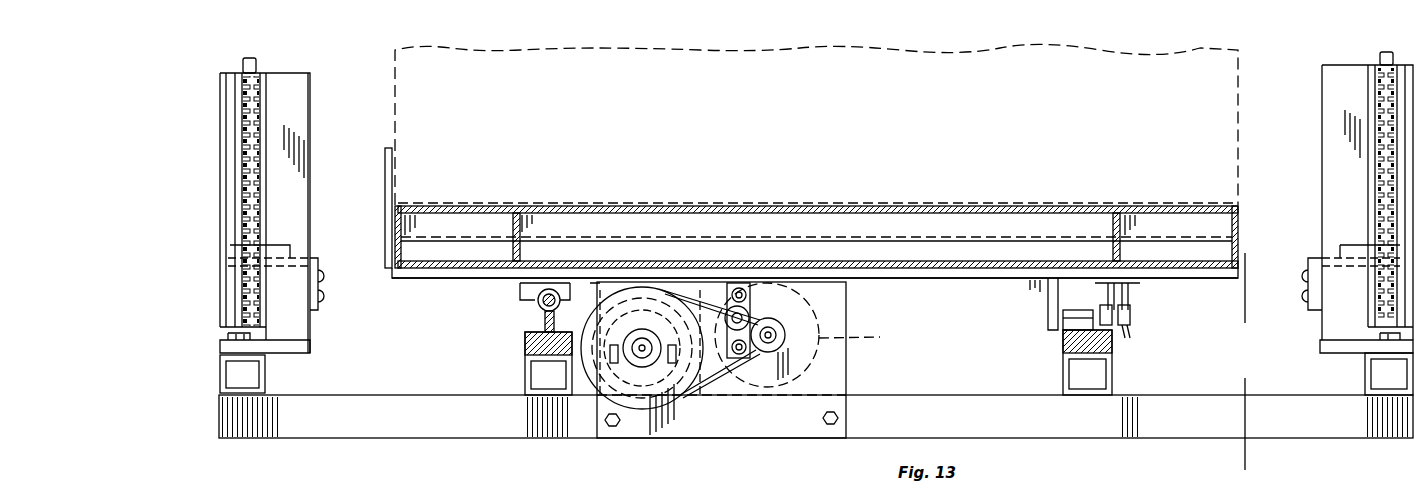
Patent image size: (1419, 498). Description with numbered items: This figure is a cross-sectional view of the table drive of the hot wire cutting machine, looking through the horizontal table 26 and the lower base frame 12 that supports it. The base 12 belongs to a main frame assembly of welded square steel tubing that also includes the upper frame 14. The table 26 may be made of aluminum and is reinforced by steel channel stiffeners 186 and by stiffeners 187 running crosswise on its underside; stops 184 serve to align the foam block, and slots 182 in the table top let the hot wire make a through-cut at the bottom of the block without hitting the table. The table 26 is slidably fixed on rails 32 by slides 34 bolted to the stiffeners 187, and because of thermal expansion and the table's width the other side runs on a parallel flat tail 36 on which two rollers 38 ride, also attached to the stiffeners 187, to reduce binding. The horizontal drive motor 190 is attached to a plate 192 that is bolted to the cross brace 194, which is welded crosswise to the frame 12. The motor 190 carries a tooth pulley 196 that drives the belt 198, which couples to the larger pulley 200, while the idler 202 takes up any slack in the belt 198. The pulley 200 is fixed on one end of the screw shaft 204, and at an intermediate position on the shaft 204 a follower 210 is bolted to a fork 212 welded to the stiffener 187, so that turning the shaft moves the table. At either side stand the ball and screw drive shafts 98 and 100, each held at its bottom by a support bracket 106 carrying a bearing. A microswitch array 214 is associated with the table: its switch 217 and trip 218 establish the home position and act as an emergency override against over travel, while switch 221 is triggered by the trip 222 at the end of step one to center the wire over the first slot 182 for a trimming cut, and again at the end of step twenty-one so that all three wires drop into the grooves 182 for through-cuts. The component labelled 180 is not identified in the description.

The lower base frame 12 is at (265, 375).
The upper frame 14 is at (1244, 461).
The horizontal table 26 is at (1245, 203).
The rails 32 is at (538, 300).
The slides 34 is at (520, 285).
The parallel flat tail 36 is at (1060, 330).
The rollers 38 is at (1048, 305).
The ball and screw drive shaft 98 is at (1380, 56).
The ball and screw drive shaft 100 is at (258, 62).
The support bracket 106 is at (272, 245).
The frame 180 is at (690, 212).
The slots 182 is at (978, 215).
The stops 184 is at (385, 175).
The steel channel stiffeners 186 is at (513, 220).
The stiffeners 187 is at (1000, 278).
The horizontal drive motor 190 is at (822, 345).
The plate 192 is at (846, 380).
The cross brace 194 is at (863, 428).
The tooth pulley 196 is at (785, 335).
The belt 198 is at (716, 380).
The pulley 200 is at (638, 398).
The idler 202 is at (752, 296).
The screw shaft 204 is at (640, 350).
The follower 210 is at (640, 300).
The fork 212 is at (695, 290).
The microswitch array 214 is at (1132, 312).
The switch 217 is at (1130, 327).
The trip 218 is at (1132, 288).
The switch 221 is at (1085, 312).
The trip 222 is at (1100, 305).